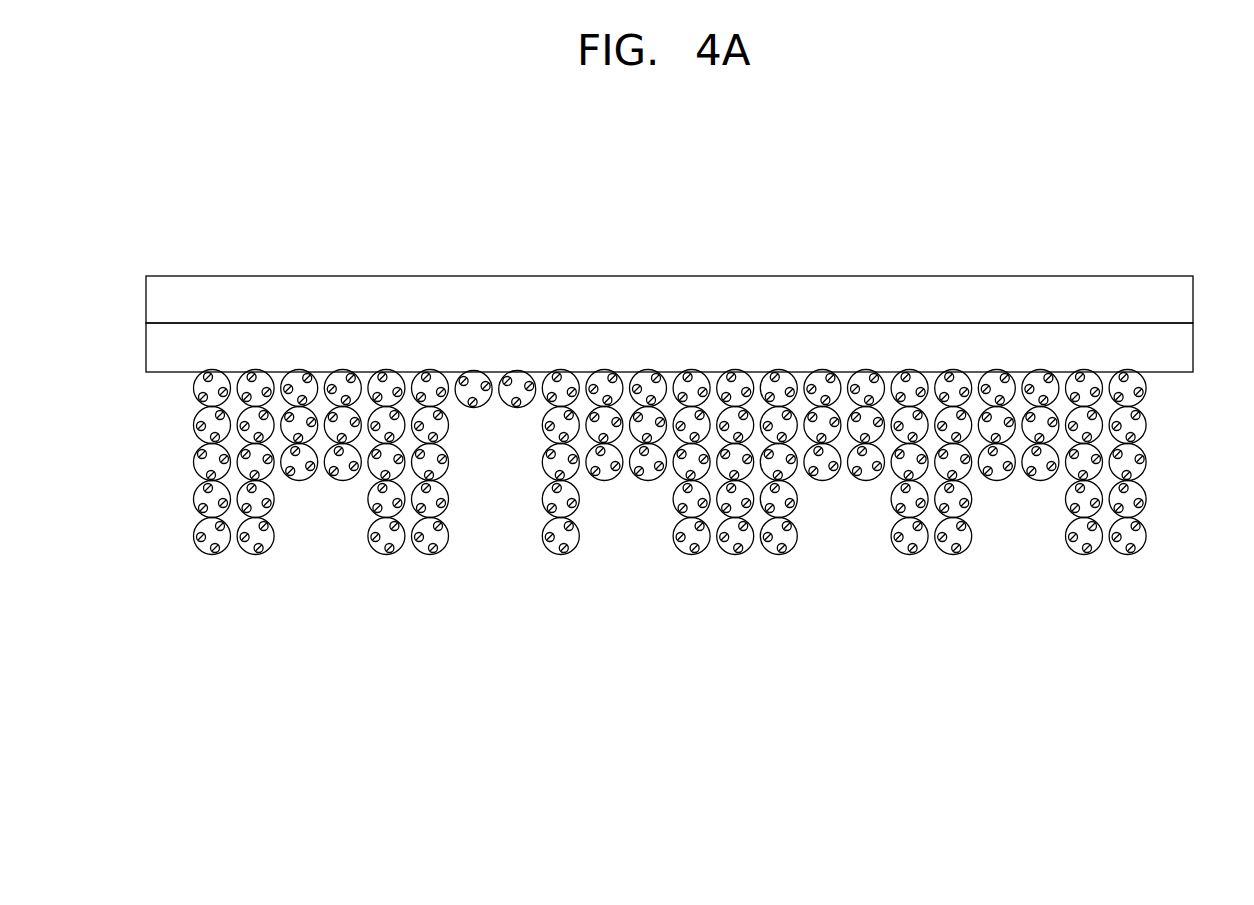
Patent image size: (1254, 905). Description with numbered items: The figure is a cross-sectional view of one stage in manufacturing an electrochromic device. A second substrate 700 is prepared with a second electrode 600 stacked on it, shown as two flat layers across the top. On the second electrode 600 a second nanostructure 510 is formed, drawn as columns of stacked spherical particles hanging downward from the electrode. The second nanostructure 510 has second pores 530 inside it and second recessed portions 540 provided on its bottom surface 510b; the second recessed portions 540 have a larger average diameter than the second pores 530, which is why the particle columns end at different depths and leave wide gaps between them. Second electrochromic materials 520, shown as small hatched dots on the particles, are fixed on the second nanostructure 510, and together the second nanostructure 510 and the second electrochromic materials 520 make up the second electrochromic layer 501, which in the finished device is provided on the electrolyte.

The second substrate 700 is at (148, 298).
The second electrode 600 is at (148, 351).
The second electrochromic layer 501 is at (673, 501).
The second nanostructure 510 is at (1136, 395).
The second electrochromic materials 520 is at (1122, 425).
The second pores 530 is at (1104, 481).
The second recessed portions 540 is at (998, 482).
The bottom surface 510b is at (1127, 554).